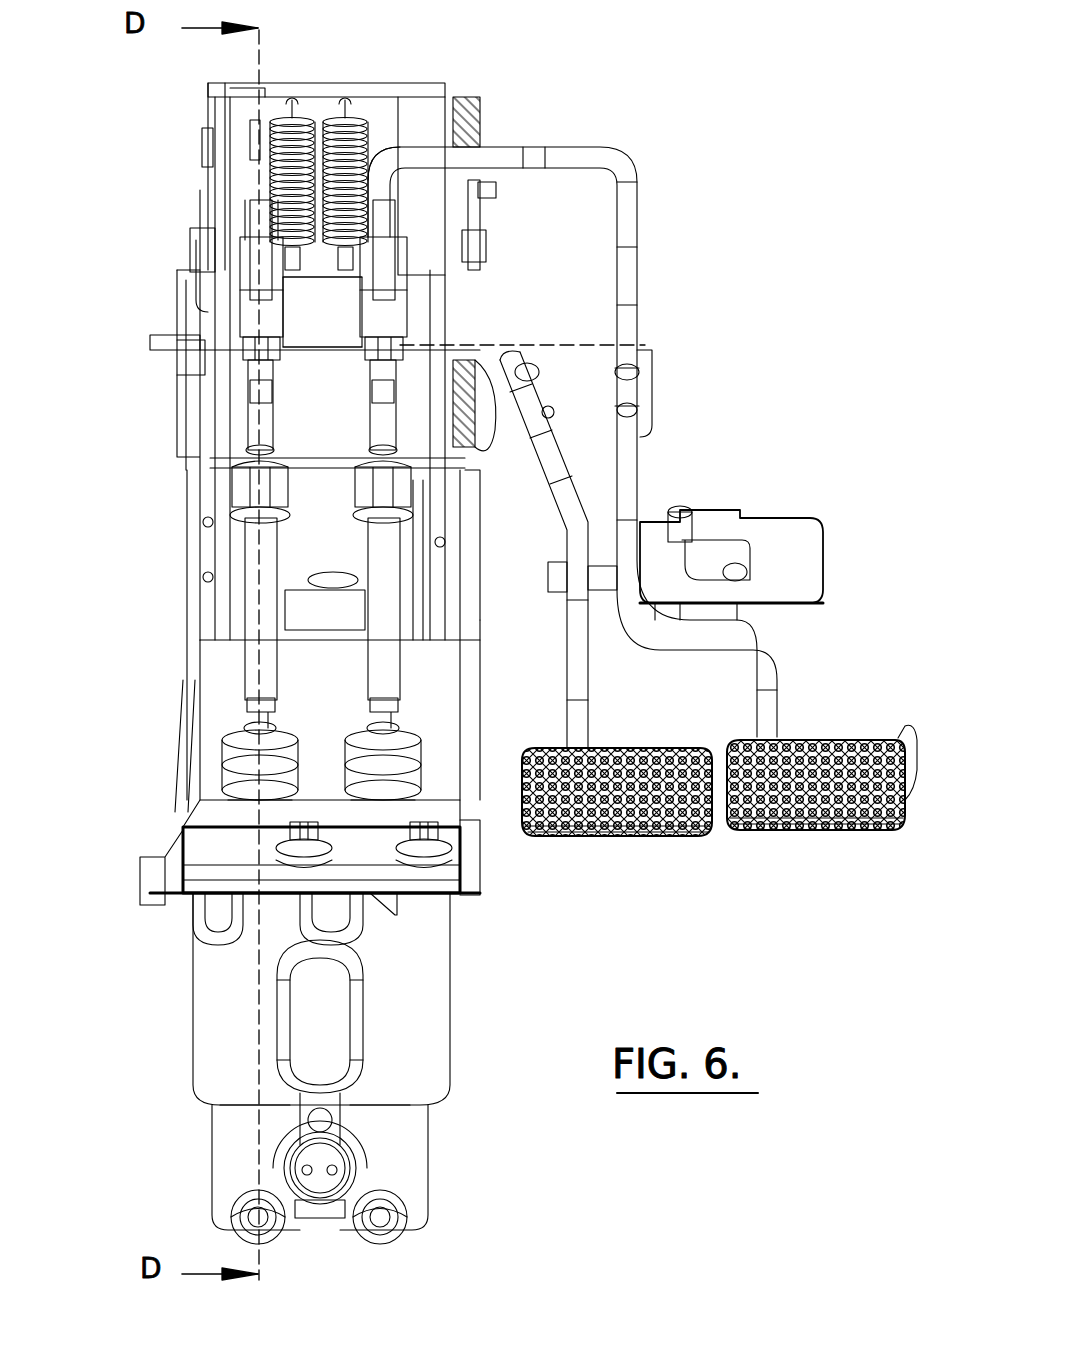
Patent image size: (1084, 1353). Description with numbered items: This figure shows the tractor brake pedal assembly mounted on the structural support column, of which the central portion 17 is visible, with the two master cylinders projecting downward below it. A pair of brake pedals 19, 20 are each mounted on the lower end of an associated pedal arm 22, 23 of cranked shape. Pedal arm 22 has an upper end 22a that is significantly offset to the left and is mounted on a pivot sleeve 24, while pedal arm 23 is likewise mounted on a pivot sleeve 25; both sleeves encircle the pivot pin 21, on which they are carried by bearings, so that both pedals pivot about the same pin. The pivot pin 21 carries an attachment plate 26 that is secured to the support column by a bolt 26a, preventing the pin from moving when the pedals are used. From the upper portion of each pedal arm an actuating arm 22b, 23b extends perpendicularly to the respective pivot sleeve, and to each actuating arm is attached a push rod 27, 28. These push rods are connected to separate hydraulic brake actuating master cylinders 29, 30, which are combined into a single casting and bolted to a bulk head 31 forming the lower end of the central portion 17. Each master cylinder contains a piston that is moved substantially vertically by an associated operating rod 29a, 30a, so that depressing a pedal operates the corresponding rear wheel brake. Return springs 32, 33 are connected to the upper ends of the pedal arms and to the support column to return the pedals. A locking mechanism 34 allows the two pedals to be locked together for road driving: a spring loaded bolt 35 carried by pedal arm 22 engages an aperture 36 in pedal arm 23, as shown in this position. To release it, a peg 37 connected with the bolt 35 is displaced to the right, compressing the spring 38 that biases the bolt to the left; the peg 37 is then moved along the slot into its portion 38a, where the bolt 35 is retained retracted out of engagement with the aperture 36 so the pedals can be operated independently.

The central portion 17 is at (456, 601).
The brake pedal 19 is at (815, 830).
The brake pedal 20 is at (645, 835).
The pivot pin 21 is at (198, 252).
The pedal arm 22 is at (628, 282).
The upper end of pedal arm 22a is at (385, 174).
The actuating arm 22b is at (380, 270).
The pedal arm 23 is at (558, 490).
The actuating arm 23b is at (263, 252).
The pivot sleeve 24 is at (421, 222).
The pivot sleeve 25 is at (310, 268).
The attachment plate 26 is at (480, 205).
The bolt 26a is at (492, 186).
The push rod 27 is at (386, 625).
The push rod 28 is at (270, 665).
The hydraulic brake actuating master cylinder 29 is at (405, 1022).
The operating rod 29a is at (392, 722).
The hydraulic brake actuating master cylinder 30 is at (220, 1037).
The operating rod 30a is at (245, 716).
The bulk head 31 is at (200, 857).
The return spring 32 is at (355, 132).
The return spring 33 is at (300, 115).
The locking mechanism 34 is at (770, 572).
The spring loaded bolt 35 is at (602, 575).
The aperture 36 is at (572, 612).
The peg 37 is at (682, 510).
The spring 38 is at (712, 548).
The portion of slot 38a is at (752, 577).